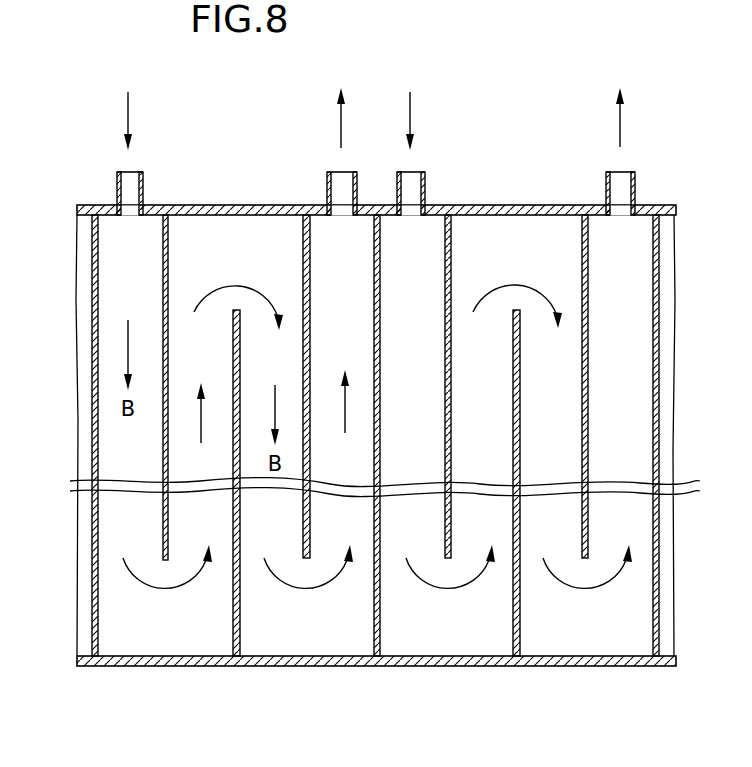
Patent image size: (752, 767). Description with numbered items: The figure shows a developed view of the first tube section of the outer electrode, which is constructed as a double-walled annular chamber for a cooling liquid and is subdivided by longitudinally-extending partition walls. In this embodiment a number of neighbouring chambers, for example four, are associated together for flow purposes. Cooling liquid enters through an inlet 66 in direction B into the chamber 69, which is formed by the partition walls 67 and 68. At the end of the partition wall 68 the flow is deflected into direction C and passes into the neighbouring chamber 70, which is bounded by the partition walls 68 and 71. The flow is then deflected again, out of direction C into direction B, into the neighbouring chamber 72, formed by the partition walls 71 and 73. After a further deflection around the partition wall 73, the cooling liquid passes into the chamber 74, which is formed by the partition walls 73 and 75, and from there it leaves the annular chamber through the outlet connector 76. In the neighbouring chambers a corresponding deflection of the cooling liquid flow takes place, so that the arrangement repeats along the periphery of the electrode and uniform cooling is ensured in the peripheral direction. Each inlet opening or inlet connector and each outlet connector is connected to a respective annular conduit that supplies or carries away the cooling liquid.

The inlet 66 is at (117, 192).
The partition wall 67 is at (92, 282).
The partition wall 68 is at (168, 247).
The chamber 69 is at (108, 443).
The neighbouring chamber 70 is at (183, 342).
The partition wall 71 is at (233, 633).
The neighbouring chamber 72 is at (310, 526).
The partition wall 73 is at (303, 245).
The chamber 74 is at (358, 423).
The partition wall 75 is at (374, 630).
The outlet connector 76 is at (327, 188).